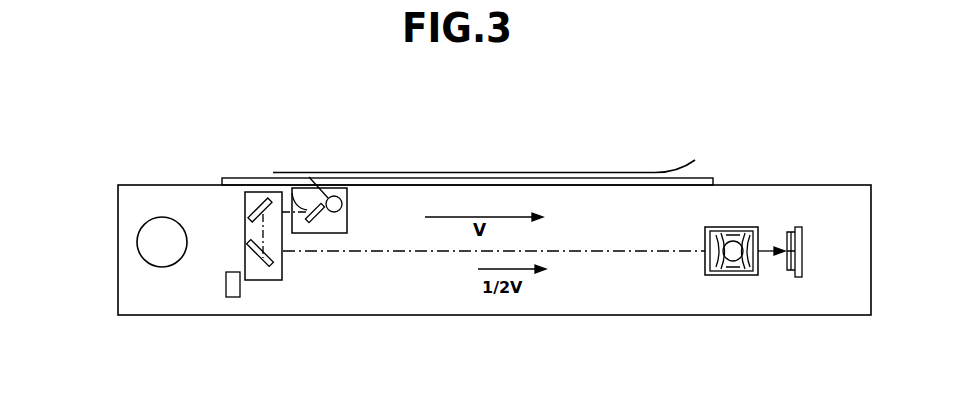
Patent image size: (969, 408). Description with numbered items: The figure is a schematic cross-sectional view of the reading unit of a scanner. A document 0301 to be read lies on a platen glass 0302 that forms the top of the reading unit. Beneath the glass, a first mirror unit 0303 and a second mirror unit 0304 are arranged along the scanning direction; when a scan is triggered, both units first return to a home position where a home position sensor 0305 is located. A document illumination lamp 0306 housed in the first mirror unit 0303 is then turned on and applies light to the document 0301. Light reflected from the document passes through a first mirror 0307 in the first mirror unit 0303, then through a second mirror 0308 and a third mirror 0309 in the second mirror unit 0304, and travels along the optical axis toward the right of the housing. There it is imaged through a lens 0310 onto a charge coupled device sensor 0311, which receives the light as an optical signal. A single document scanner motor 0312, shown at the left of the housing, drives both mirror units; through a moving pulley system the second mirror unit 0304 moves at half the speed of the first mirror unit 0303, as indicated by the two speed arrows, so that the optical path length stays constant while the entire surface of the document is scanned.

The document 0301 is at (518, 172).
The platen glass 0302 is at (253, 178).
The first mirror unit 0303 is at (348, 215).
The second mirror unit 0304 is at (270, 280).
The home position sensor 0305 is at (235, 297).
The document illumination lamp 0306 is at (333, 196).
The first mirror 0307 is at (310, 233).
The second mirror 0308 is at (250, 214).
The third mirror 0309 is at (247, 252).
The lens 0310 is at (738, 227).
The CCD sensor 0311 is at (802, 227).
The document scanner motor 0312 is at (137, 242).